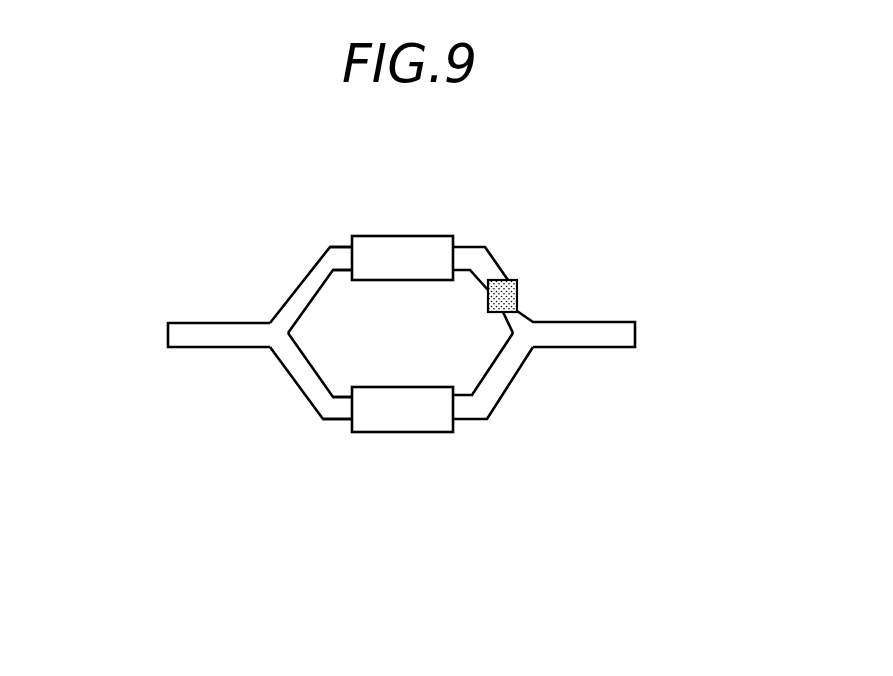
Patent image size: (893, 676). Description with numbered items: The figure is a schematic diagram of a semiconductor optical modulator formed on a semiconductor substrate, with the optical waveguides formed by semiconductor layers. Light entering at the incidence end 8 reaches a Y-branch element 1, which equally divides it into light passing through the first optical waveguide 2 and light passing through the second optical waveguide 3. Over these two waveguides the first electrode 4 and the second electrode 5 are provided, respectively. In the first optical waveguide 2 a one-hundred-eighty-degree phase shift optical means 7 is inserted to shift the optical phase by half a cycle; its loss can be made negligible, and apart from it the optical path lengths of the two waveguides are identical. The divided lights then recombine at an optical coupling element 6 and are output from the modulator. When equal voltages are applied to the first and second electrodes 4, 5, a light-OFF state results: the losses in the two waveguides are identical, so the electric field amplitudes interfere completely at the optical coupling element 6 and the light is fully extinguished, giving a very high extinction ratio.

The Y-branch element 1 is at (272, 352).
The first optical waveguide 2 is at (330, 247).
The second optical waveguide 3 is at (338, 420).
The first electrode 4 is at (447, 245).
The second electrode 5 is at (428, 423).
The optical coupling element 6 is at (533, 350).
The 180° phase shift optical means 7 is at (520, 287).
The incidence end 8 is at (167, 350).